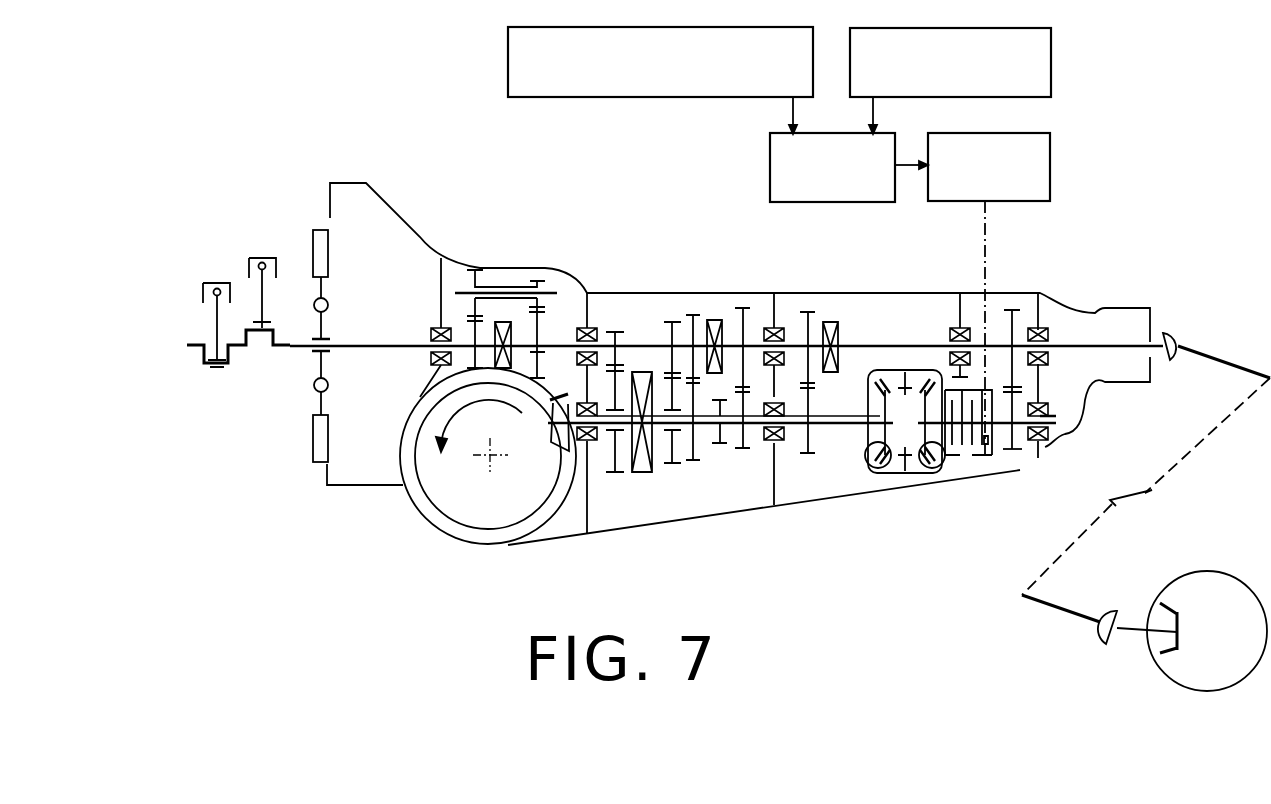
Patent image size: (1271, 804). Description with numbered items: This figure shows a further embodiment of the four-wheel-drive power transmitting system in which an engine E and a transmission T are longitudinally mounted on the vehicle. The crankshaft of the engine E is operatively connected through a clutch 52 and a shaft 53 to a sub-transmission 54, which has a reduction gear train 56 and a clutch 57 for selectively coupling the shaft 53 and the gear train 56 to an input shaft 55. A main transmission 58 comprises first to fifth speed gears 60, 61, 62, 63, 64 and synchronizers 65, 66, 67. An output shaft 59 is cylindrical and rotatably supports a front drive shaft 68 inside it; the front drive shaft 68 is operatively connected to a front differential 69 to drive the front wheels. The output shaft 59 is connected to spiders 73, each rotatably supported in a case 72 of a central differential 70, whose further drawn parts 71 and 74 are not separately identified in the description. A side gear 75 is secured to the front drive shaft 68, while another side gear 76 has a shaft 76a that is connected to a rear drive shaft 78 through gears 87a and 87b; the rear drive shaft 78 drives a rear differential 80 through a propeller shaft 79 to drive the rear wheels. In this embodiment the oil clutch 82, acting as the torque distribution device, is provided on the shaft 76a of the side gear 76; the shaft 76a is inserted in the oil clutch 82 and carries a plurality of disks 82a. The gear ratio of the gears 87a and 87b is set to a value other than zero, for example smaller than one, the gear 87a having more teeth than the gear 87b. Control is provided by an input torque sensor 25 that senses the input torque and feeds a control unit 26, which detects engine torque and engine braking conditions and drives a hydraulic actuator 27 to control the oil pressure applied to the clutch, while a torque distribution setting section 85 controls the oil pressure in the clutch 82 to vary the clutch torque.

The torque distribution setting section 85 is at (779, 26).
The input torque sensor 25 is at (1034, 26).
The control unit 26 is at (770, 182).
The hydraulic actuator 27 is at (1050, 182).
The engine E is at (235, 272).
The transmission T is at (891, 274).
The clutch 52 is at (330, 266).
The shaft 53 is at (396, 342).
The sub-transmission 54 is at (508, 280).
The input shaft 55 is at (560, 336).
The reduction gear train 56 is at (540, 282).
The clutch 57 is at (522, 356).
The main transmission 58 is at (706, 298).
The output shaft 59 is at (800, 424).
The first speed gear 60 is at (621, 320).
The second speed gear 61 is at (672, 327).
The third speed gear 62 is at (692, 308).
The fourth speed gear 63 is at (746, 306).
The fifth speed gear 64 is at (812, 310).
The synchronizer 65 is at (642, 476).
The synchronizer 66 is at (714, 318).
The synchronizer 67 is at (839, 354).
The front drive shaft 68 is at (733, 442).
The front differential 69 is at (531, 523).
The central differential 70 is at (907, 312).
The differential 71 is at (889, 362).
The case 72 is at (912, 370).
The spiders 73 is at (893, 478).
The side gear 74 is at (880, 475).
The side gear 75 is at (869, 440).
The side gear 76 is at (937, 472).
The shaft 76a is at (1056, 440).
The rear drive shaft 78 is at (1110, 345).
The propeller shaft 79 is at (1250, 372).
The rear differential 80 is at (1172, 675).
The oil clutch 82 is at (962, 458).
The disks 82a is at (983, 458).
The gear 87a is at (1014, 456).
The gear 87b is at (1012, 310).